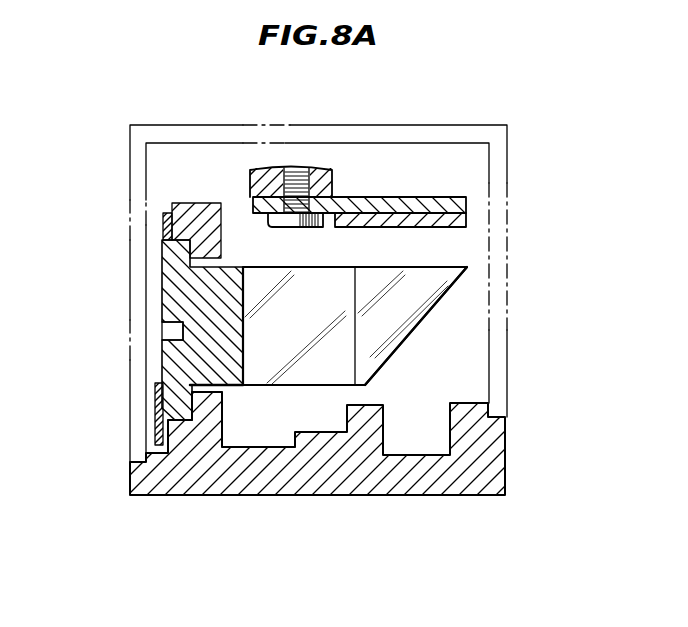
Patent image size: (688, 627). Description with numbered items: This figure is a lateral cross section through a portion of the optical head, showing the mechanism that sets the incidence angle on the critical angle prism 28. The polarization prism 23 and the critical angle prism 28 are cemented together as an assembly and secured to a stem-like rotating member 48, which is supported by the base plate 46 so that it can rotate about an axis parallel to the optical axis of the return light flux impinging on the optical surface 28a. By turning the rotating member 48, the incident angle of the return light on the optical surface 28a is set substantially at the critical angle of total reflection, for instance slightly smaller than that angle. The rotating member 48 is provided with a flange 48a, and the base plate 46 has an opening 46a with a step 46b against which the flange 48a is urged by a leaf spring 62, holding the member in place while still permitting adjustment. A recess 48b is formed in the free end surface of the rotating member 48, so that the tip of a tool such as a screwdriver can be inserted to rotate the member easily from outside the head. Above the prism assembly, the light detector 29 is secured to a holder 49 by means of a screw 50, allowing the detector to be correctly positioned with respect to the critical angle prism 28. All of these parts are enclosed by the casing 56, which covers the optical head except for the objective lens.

The polarization prism 23 is at (340, 377).
The critical angle prism 28 is at (457, 287).
The optical surface 28a is at (425, 320).
The light detector 29 is at (466, 217).
The base plate 46 is at (259, 479).
The opening 46a is at (218, 391).
The step 46b is at (187, 393).
The rotating member 48 is at (173, 287).
The flange 48a is at (168, 240).
The recess 48b is at (175, 329).
The holder 49 is at (327, 168).
The screw 50 is at (323, 224).
The casing 56 is at (507, 158).
The leaf spring 62 is at (155, 397).